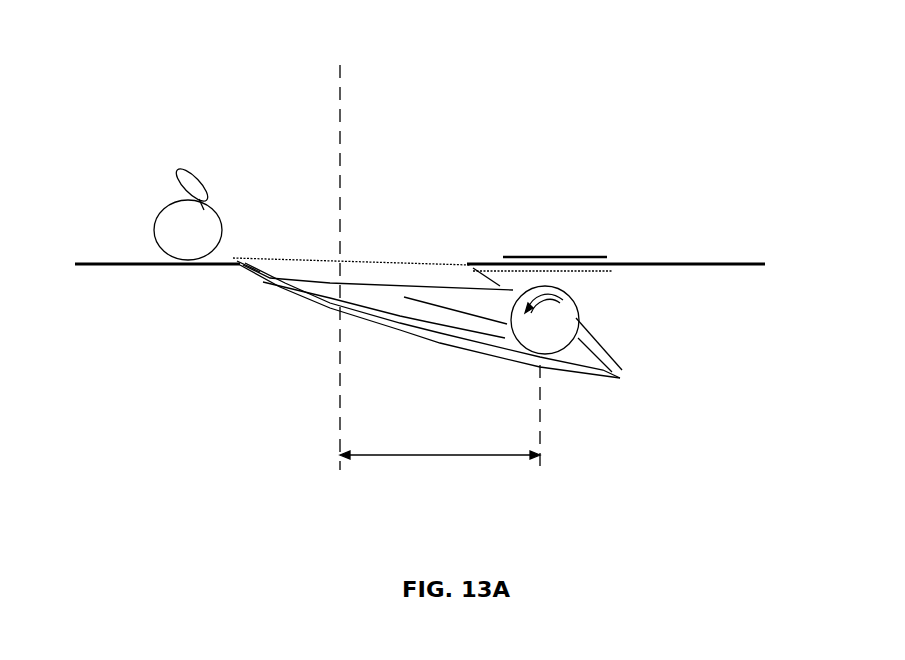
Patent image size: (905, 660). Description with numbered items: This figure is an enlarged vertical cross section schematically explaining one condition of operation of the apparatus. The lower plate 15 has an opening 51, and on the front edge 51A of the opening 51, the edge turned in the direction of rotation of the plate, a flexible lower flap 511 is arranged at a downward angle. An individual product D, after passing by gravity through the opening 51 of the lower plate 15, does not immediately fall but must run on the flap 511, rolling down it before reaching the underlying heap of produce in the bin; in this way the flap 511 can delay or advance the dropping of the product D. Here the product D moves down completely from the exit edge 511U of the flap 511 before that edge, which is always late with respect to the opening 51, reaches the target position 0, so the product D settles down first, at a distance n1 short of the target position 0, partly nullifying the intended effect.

The target position 0 is at (343, 112).
The lower plate 15 is at (652, 260).
The opening 51 is at (369, 253).
The front edge 51A is at (240, 258).
The lower flap 511 is at (428, 322).
The exit edge 511U is at (620, 364).
The product D is at (567, 314).
The distance n1 is at (440, 417).